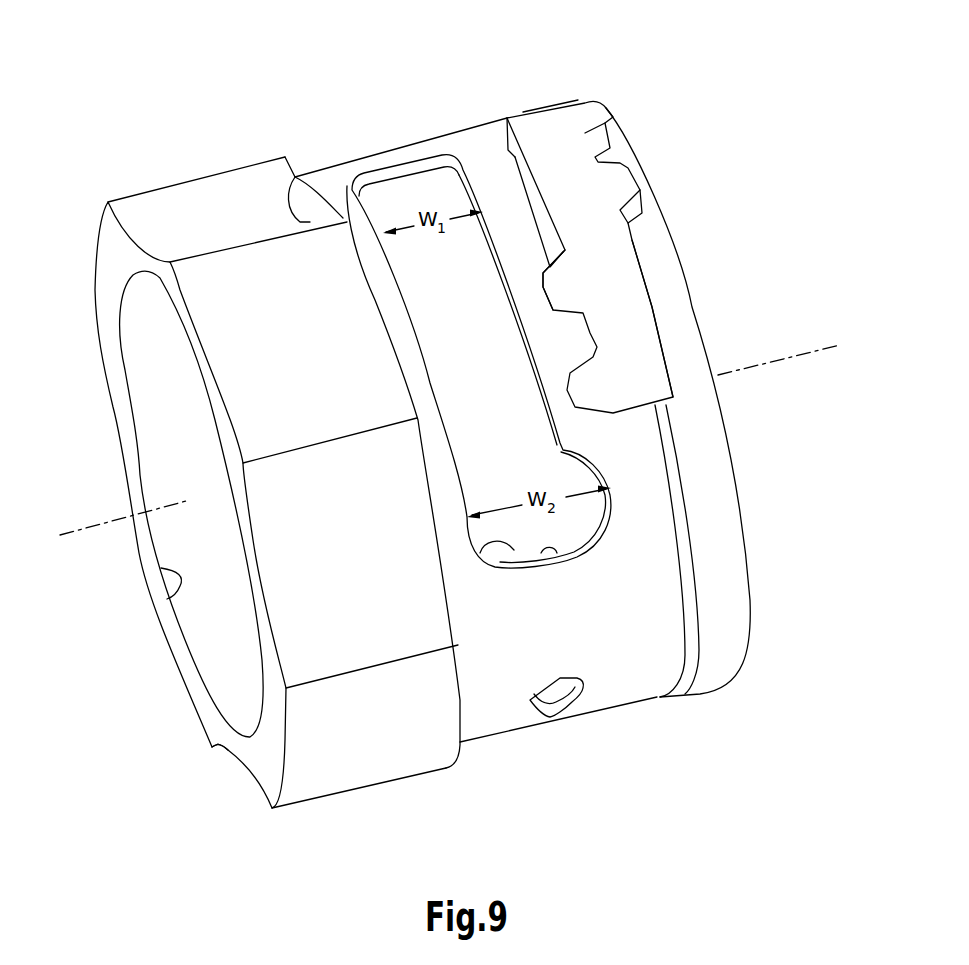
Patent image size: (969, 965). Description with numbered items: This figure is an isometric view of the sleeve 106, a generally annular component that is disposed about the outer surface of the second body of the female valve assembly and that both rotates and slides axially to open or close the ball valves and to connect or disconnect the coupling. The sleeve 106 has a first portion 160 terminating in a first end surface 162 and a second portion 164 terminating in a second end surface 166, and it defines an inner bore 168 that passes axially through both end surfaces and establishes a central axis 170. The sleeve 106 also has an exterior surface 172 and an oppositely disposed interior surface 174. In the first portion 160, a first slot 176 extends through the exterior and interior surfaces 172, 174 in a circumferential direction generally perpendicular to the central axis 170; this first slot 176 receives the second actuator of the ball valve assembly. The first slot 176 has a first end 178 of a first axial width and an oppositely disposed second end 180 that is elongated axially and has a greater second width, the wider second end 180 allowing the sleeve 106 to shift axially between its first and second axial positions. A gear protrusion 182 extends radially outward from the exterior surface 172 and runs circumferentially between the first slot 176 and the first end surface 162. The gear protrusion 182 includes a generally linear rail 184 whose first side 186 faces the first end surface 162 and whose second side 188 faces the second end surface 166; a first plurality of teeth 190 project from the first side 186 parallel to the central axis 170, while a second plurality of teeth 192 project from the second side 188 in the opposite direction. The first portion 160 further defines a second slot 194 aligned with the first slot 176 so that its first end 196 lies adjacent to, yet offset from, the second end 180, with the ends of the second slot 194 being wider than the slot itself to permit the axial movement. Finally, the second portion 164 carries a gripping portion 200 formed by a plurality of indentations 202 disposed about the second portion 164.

The sleeve 106 is at (278, 77).
The first portion 160 is at (651, 717).
The first end surface 162 is at (748, 541).
The second portion 164 is at (154, 163).
The second end surface 166 is at (272, 750).
The inner bore 168 is at (178, 592).
The central axis 170 is at (773, 375).
The exterior surface 172 is at (647, 596).
The interior surface 174 is at (190, 457).
The first slot 176 is at (415, 379).
The first end 178 is at (395, 166).
The second end 180 is at (543, 558).
The gear protrusion 182 is at (556, 128).
The rail 184 is at (600, 266).
The first side 186 is at (653, 308).
The second side 188 is at (506, 142).
The first plurality of teeth 190 is at (628, 133).
The second plurality of teeth 192 is at (545, 297).
The second slot 194 is at (519, 718).
The first end 196 is at (553, 677).
The gripping portion 200 is at (373, 753).
The indentations 202 is at (350, 576).